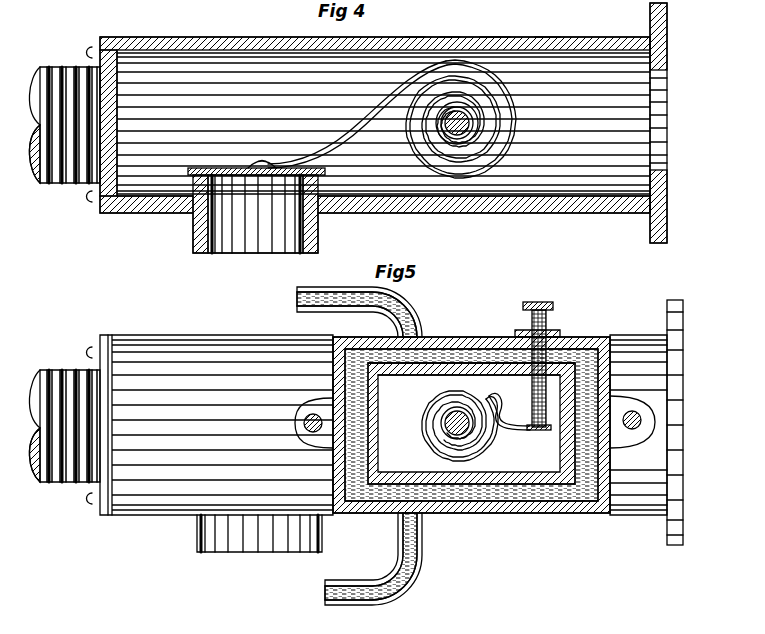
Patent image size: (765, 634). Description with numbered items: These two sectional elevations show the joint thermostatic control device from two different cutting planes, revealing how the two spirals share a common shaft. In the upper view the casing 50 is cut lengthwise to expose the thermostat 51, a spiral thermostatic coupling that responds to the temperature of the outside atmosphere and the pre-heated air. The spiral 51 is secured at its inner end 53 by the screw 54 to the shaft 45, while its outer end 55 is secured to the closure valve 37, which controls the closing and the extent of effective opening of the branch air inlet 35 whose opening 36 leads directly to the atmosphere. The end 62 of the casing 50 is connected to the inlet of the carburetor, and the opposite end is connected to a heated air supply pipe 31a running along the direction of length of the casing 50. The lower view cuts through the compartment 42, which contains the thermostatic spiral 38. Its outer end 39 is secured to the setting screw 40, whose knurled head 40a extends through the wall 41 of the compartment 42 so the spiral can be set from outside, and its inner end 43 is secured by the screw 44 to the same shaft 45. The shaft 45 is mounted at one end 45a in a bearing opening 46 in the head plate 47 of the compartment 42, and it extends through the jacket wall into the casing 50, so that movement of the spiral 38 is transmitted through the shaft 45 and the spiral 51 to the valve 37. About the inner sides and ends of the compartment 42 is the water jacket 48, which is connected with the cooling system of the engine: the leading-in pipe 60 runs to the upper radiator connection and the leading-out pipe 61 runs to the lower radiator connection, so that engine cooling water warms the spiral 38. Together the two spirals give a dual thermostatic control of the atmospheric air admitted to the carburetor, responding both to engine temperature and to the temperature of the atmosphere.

In FIG. 4, the heated air supply pipe 31a is at (62, 72).
In FIG. 5, the heated air supply pipe 31a is at (62, 372).
In FIG. 4, the branch air inlet 35 is at (246, 235).
In FIG. 5, the branch air inlet 35 is at (266, 540).
In FIG. 4, the opening 36 is at (282, 250).
In FIG. 4, the closure valve 37 is at (205, 168).
In FIG. 5, the thermostatic spiral 38 is at (480, 488).
In FIG. 5, the outer end 39 is at (528, 424).
In FIG. 5, the setting screw 40 is at (548, 315).
In FIG. 5, the knurled head 40a is at (536, 301).
In FIG. 5, the wall 41 is at (505, 365).
In FIG. 4, the compartment 42 is at (418, 18).
In FIG. 5, the compartment 42 is at (520, 490).
In FIG. 5, the inner end 43 is at (470, 428).
In FIG. 5, the screw 44 is at (478, 436).
In FIG. 4, the shaft 45 is at (517, 122).
In FIG. 5, the shaft 45 is at (440, 440).
In FIG. 4, the shaft end 45a is at (497, 18).
In FIG. 4, the bearing opening 46 is at (452, 18).
In FIG. 4, the head plate 47 is at (548, 18).
In FIG. 5, the jacket 48 is at (588, 490).
In FIG. 4, the casing 50 is at (566, 72).
In FIG. 4, the thermostat 51 is at (520, 148).
In FIG. 4, the inner end 53 is at (440, 138).
In FIG. 4, the screw 54 is at (418, 124).
In FIG. 4, the outer end 55 is at (262, 162).
In FIG. 5, the leading-in pipe 60 is at (385, 592).
In FIG. 5, the leading-out pipe 61 is at (306, 290).
In FIG. 4, the end 62 is at (660, 58).
In FIG. 5, the end 62 is at (676, 332).